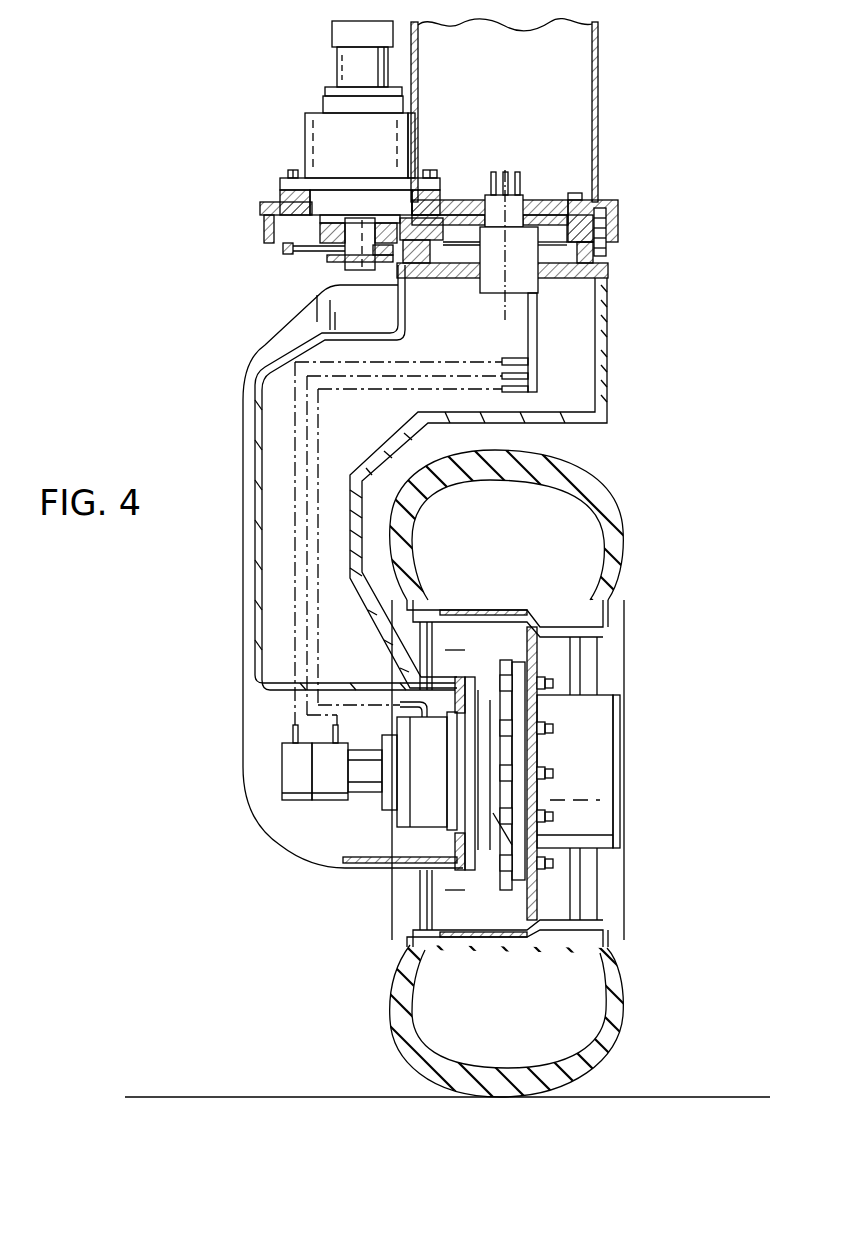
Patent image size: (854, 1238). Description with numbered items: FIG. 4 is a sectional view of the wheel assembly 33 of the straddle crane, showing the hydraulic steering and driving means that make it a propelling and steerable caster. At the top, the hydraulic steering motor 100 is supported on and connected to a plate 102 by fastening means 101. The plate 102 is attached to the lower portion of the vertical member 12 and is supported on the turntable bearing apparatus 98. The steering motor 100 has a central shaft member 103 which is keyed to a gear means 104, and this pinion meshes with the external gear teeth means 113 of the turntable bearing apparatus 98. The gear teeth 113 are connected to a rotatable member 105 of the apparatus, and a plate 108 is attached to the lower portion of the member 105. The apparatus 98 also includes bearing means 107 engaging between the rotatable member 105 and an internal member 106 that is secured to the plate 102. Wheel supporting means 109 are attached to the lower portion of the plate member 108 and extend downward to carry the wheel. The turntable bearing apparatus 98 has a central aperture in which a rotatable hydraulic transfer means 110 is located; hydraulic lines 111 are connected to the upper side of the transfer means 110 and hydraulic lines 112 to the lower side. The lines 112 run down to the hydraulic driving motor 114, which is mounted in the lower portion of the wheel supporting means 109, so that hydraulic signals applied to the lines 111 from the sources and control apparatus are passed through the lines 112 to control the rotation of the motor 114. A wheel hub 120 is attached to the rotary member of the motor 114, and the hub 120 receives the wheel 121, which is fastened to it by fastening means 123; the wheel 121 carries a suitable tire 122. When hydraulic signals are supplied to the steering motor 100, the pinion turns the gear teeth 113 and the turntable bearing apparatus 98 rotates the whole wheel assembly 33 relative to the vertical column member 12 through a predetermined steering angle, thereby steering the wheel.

The vertical member 12 is at (598, 64).
The wheel assembly 33 is at (728, 199).
The turntable bearing apparatus 98 is at (626, 202).
The hydraulic steering motor 100 is at (308, 142).
The fastening means 101 is at (288, 176).
The plate 102 is at (262, 208).
The central shaft member 103 is at (362, 263).
The gear means 104 is at (290, 242).
The rotatable member 105 is at (417, 281).
The internal member 106 is at (453, 199).
The bearing means 107 is at (600, 230).
The plate 108 is at (589, 280).
The wheel supporting means 109 is at (602, 388).
The rotatable hydraulic transfer means 110 is at (516, 212).
The hydraulic lines 111 is at (508, 172).
The hydraulic lines 112 is at (537, 343).
The external gear teeth means 113 is at (410, 222).
The hydraulic driving motor 114 is at (293, 797).
The wheel hub 120 is at (518, 757).
The wheel 121 is at (576, 657).
The tire 122 is at (616, 1018).
The fastening means 123 is at (542, 878).